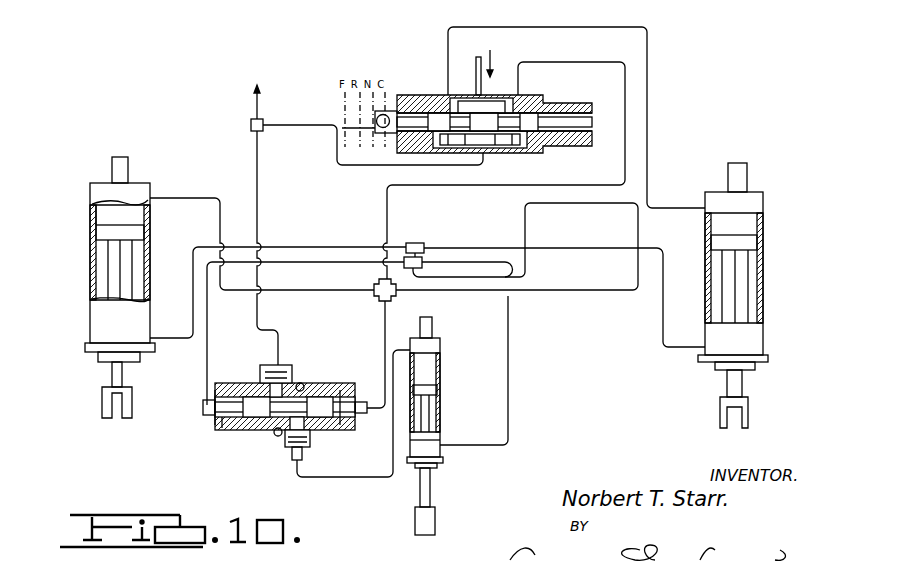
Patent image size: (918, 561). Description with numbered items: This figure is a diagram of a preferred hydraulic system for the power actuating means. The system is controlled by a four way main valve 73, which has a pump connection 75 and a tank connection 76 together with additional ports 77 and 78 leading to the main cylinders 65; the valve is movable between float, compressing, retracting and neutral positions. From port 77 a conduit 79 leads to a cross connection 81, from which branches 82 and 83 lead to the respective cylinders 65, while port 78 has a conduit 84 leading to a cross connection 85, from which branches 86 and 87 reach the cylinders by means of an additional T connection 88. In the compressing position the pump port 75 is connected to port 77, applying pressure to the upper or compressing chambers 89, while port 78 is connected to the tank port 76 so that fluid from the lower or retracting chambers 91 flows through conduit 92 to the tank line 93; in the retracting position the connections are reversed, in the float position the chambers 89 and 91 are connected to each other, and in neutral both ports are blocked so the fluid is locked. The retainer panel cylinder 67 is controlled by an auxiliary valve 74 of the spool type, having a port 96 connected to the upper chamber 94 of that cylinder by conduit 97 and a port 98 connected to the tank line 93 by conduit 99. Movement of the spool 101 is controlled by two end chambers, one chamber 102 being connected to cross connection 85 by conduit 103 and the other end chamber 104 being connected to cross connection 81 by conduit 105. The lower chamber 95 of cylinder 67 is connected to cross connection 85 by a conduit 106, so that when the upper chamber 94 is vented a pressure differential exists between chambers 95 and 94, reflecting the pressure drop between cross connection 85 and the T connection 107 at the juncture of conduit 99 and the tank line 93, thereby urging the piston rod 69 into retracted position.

The cylinders 65 is at (92, 292).
The retainer panel cylinder 67 is at (442, 392).
The piston rod 69 is at (430, 422).
The four way main valve 73 is at (426, 90).
The auxiliary valve 74 is at (258, 432).
The pump connection 75 is at (486, 95).
The tank connection 76 is at (488, 153).
The port 77 is at (530, 98).
The port 78 is at (476, 92).
The conduit 79 is at (570, 185).
The cross connection 81 is at (374, 286).
The branch 82 is at (322, 290).
The branch 83 is at (440, 290).
The conduit 84 is at (648, 104).
The cross connection 85 is at (428, 257).
The branch 86 is at (340, 247).
The branch 87 is at (482, 247).
The T connection 88 is at (417, 243).
The upper or compressing chambers 89 is at (96, 212).
The lower or retracting chambers 91 is at (102, 262).
The conduit 92 is at (302, 125).
The tank line 93 is at (262, 101).
The upper chamber 94 is at (765, 216).
The lower chamber 95 is at (443, 455).
The port 96 is at (312, 437).
The conduit 97 is at (355, 476).
The port 98 is at (294, 378).
The conduit 99 is at (259, 190).
The spool 101 is at (244, 392).
The end chamber 102 is at (226, 428).
The conduit 103 is at (318, 272).
The end chamber 104 is at (345, 398).
The conduit 105 is at (384, 324).
The conduit 106 is at (510, 370).
The T connection 107 is at (249, 125).